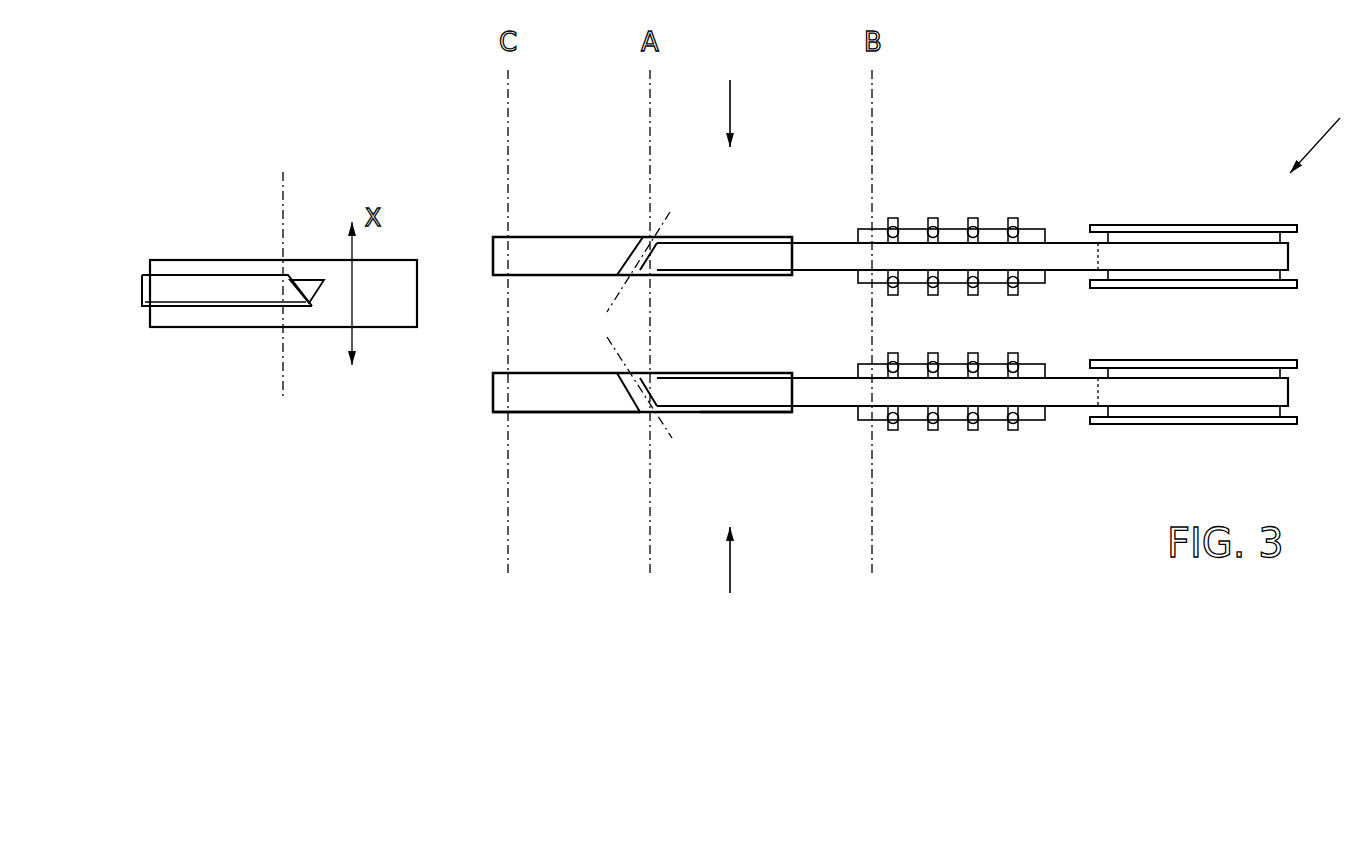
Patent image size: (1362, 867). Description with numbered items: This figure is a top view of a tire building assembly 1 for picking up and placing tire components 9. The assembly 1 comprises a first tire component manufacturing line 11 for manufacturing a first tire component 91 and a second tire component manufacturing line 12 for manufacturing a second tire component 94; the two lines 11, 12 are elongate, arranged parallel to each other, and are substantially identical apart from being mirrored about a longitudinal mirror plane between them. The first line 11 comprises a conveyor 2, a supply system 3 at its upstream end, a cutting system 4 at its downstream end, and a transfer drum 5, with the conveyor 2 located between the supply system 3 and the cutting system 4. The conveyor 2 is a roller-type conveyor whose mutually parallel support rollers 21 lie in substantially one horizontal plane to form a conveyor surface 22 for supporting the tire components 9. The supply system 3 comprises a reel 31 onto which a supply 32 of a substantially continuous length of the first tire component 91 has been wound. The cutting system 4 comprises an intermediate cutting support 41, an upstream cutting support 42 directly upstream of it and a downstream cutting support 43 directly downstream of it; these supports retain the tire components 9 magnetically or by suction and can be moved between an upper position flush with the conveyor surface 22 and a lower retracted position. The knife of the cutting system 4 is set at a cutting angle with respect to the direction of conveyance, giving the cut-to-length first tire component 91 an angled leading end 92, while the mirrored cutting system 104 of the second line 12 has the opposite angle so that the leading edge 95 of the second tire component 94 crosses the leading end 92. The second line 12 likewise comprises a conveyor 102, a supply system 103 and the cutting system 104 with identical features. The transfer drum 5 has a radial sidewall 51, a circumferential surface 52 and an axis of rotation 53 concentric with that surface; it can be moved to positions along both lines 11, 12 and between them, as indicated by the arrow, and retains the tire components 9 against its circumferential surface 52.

The tire building assembly 1 is at (1320, 132).
The conveyor 2 is at (937, 453).
The supply system 3 is at (1123, 424).
The cutting system 4 is at (460, 460).
The transfer drum 5 is at (190, 317).
The tire components 9 is at (1070, 242).
The first tire component manufacturing line 11 is at (729, 577).
The second tire component manufacturing line 12 is at (732, 99).
The support rollers 21 is at (875, 420).
The conveyor surface 22 is at (893, 363).
The reel 31 is at (1257, 425).
The supply 32 is at (1187, 406).
The intermediate cutting support 41 is at (636, 398).
The upstream cutting support 42 is at (718, 412).
The downstream cutting support 43 is at (540, 400).
The radial sidewall 51 is at (240, 327).
The circumferential surface 52 is at (300, 312).
The axis of rotation 53 is at (284, 303).
The first tire component 91 is at (815, 406).
The leading end 92 is at (657, 398).
The second tire component 94 is at (818, 250).
The leading edge 95 is at (648, 238).
The conveyor 102 is at (938, 190).
The supply system 103 is at (1167, 225).
The cutting system 104 is at (480, 210).